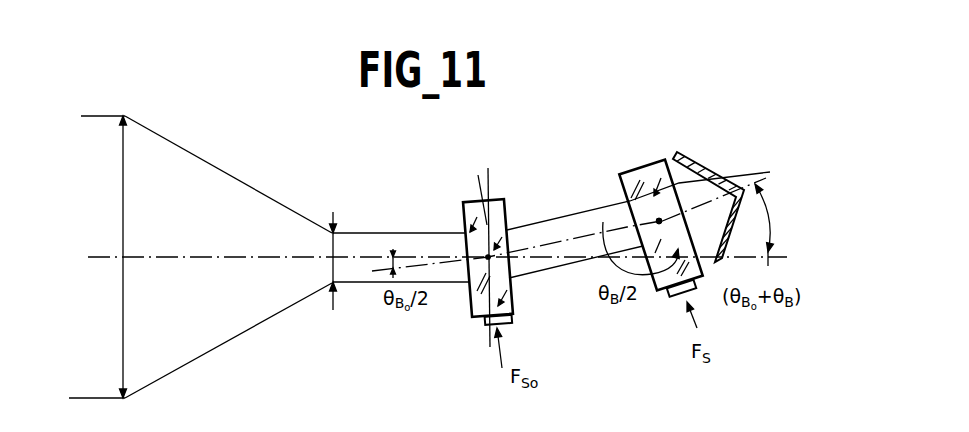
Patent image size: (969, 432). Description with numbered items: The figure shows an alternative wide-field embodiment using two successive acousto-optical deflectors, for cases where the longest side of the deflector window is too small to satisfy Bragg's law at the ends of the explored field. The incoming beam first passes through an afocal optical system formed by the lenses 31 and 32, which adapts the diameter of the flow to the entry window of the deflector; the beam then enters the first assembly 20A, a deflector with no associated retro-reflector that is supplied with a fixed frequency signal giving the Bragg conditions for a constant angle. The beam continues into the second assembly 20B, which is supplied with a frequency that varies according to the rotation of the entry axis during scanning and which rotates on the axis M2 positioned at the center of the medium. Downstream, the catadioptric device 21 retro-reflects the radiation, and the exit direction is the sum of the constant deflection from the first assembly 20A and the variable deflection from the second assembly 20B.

The lens 31 is at (124, 215).
The lens 32 is at (400, 253).
The first assembly 20A is at (465, 217).
The second assembly 20B is at (637, 153).
The catadioptric device 21 is at (714, 170).
The axis M2 is at (660, 214).